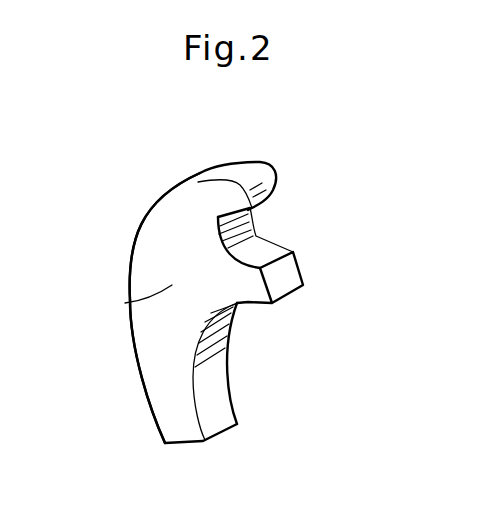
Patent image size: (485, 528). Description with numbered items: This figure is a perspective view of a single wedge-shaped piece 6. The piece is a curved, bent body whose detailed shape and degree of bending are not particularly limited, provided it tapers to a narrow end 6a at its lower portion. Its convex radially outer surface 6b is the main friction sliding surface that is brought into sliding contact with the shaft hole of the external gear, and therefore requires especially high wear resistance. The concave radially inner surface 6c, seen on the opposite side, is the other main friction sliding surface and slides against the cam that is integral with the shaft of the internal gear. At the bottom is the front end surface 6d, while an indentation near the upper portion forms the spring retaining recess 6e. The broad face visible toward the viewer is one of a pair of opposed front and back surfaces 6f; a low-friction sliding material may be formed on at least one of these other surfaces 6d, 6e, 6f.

The wedge-shaped piece 6 is at (192, 317).
The narrow end 6a is at (170, 420).
The radially outer surface 6b is at (133, 250).
The radially inner surface 6c is at (222, 347).
The front end surface 6d is at (198, 442).
The spring retaining recess 6e is at (250, 218).
The front (back) surface 6f is at (130, 301).